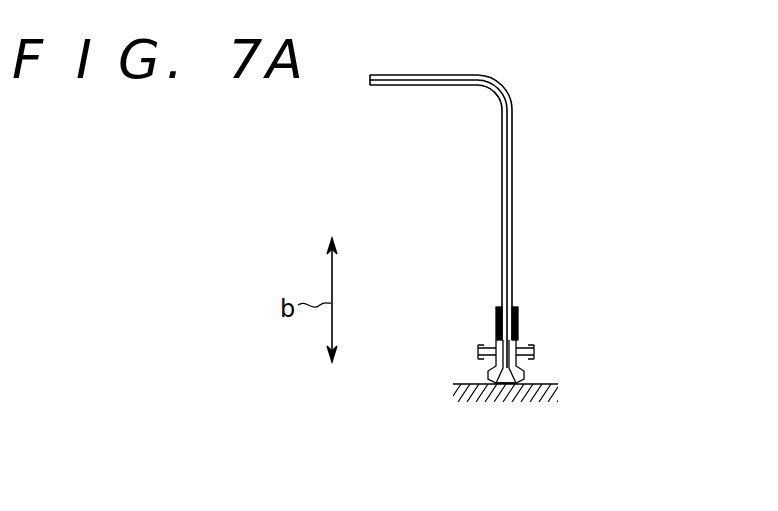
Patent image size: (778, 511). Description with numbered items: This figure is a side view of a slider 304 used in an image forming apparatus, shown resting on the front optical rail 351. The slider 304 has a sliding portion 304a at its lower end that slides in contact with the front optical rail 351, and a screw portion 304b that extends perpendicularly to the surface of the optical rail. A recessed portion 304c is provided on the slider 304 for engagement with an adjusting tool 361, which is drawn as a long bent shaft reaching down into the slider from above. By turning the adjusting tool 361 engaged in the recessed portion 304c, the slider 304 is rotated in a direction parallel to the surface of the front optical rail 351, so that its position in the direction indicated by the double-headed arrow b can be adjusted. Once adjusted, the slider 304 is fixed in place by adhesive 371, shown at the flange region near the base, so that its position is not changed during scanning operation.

The adjusting tool 361 is at (430, 74).
The recessed portion 304c is at (496, 316).
The screw portion 304b is at (518, 310).
The adhesive 371 is at (534, 343).
The slider 304 is at (518, 385).
The sliding portion 304a is at (490, 386).
The front optical rail 351 is at (550, 384).